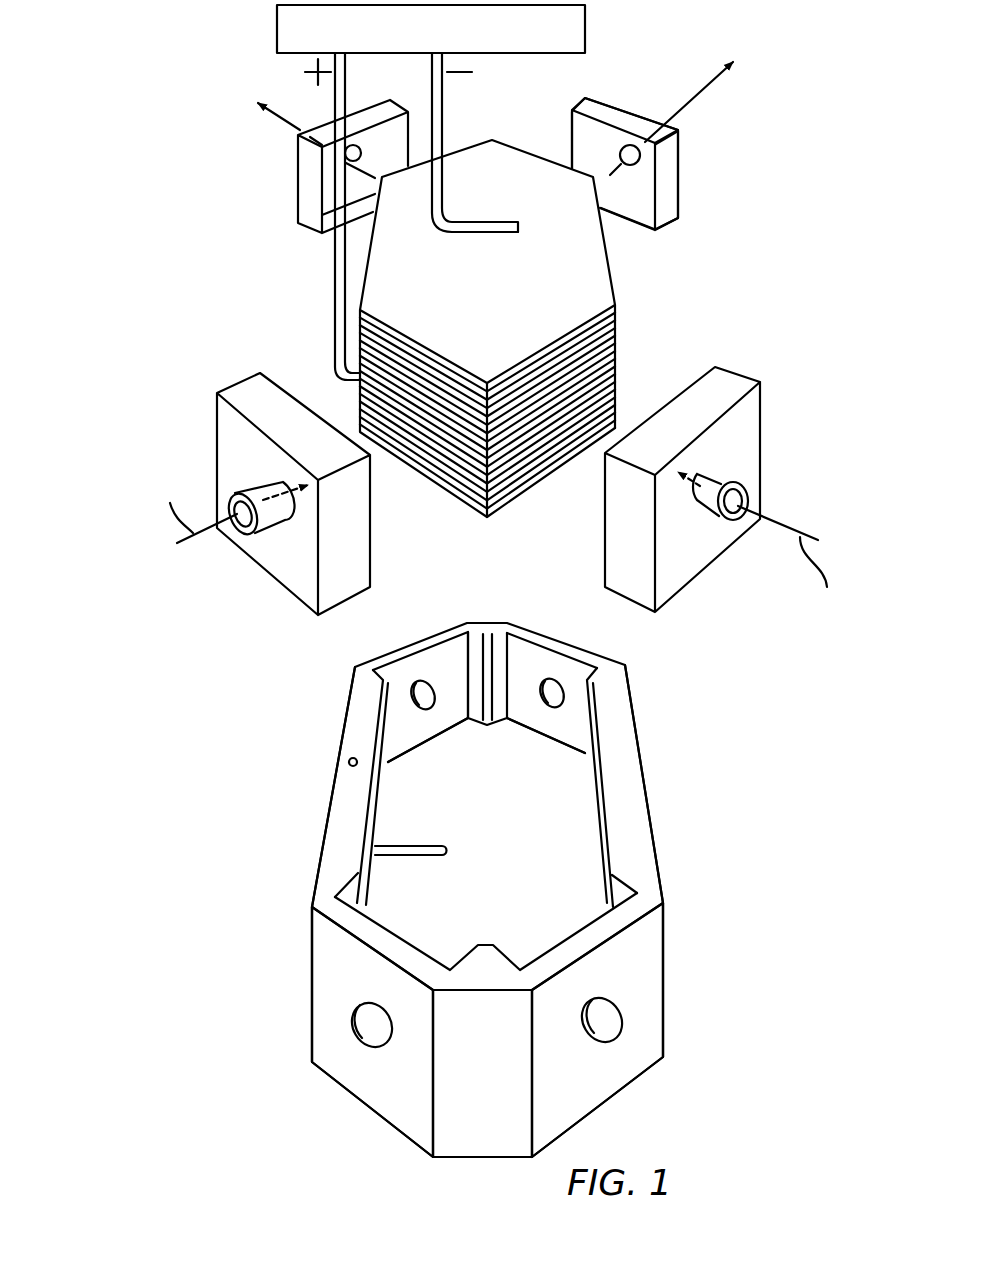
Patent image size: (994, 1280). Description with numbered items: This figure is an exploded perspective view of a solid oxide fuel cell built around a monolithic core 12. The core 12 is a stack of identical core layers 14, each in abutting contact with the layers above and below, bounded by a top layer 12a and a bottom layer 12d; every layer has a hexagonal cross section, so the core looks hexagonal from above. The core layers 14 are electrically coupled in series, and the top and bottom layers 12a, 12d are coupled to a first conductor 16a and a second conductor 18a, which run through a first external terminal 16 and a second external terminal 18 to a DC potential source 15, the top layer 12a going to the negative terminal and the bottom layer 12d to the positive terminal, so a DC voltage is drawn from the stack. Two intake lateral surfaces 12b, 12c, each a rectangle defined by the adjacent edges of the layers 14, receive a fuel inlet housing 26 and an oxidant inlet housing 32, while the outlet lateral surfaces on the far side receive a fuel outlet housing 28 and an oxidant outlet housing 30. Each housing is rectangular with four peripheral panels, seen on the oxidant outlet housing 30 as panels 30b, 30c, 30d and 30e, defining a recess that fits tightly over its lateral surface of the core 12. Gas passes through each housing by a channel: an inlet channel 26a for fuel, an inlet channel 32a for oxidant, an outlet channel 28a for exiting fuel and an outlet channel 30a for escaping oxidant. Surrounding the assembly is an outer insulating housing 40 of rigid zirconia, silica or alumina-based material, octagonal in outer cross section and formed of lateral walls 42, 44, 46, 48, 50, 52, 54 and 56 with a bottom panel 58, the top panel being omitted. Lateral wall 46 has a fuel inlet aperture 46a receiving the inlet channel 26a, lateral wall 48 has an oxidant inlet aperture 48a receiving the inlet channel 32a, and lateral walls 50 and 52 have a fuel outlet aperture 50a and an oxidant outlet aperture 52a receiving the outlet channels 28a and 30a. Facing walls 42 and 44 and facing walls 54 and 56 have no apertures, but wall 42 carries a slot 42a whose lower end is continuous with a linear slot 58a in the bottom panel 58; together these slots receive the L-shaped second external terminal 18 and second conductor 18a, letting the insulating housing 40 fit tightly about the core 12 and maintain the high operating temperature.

The monolithic core 12 is at (545, 348).
The top layer 12a is at (505, 298).
The intake lateral surface 12b is at (418, 452).
The intake lateral surface 12c is at (527, 470).
The bottom layer 12d is at (563, 472).
The core layers 14 is at (617, 330).
The DC potential source 15 is at (588, 50).
The negative lead 16 is at (440, 125).
The first conductor 16a is at (503, 218).
The second external terminal 18 is at (334, 100).
The second conductor 18a is at (332, 379).
The fuel inlet housing 26 is at (291, 564).
The inlet channel 26a is at (232, 528).
The fuel outlet housing 28 is at (308, 203).
The outlet channel 28a is at (373, 146).
The oxidant outlet housing 30 is at (600, 103).
The outlet channel 30a is at (631, 146).
The peripheral panel 30b is at (575, 147).
The peripheral panel 30c is at (620, 117).
The peripheral panel 30d is at (673, 173).
The peripheral panel 30e is at (627, 210).
The oxidant inlet housing 32 is at (727, 383).
The inlet channel 32a is at (743, 513).
The outer insulating housing 40 is at (308, 928).
The lateral wall 42 is at (328, 797).
The slot 42a is at (353, 758).
The lateral wall 44 is at (650, 778).
The lateral wall 46 is at (378, 1102).
The fuel inlet aperture 46a is at (362, 1040).
The lateral wall 48 is at (610, 1077).
The oxidant inlet aperture 48a is at (618, 1025).
The lateral wall 50 is at (378, 667).
The fuel outlet aperture 50a is at (432, 685).
The lateral wall 52 is at (575, 646).
The oxidant outlet aperture 52a is at (531, 688).
The lateral wall 54 is at (485, 1143).
The lateral wall 56 is at (487, 618).
The bottom panel 58 is at (520, 840).
The linear slot 58a is at (408, 845).